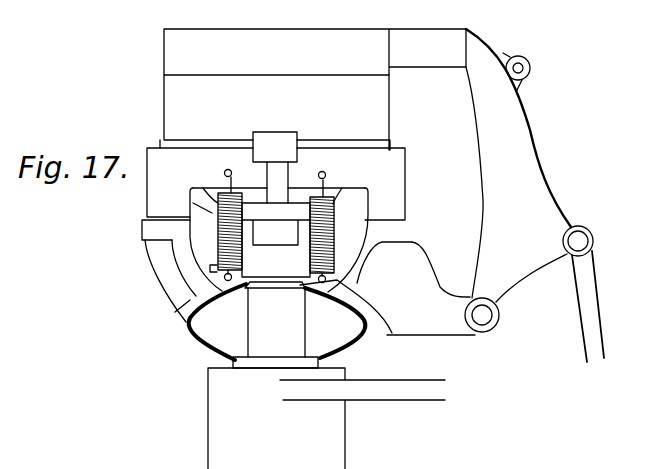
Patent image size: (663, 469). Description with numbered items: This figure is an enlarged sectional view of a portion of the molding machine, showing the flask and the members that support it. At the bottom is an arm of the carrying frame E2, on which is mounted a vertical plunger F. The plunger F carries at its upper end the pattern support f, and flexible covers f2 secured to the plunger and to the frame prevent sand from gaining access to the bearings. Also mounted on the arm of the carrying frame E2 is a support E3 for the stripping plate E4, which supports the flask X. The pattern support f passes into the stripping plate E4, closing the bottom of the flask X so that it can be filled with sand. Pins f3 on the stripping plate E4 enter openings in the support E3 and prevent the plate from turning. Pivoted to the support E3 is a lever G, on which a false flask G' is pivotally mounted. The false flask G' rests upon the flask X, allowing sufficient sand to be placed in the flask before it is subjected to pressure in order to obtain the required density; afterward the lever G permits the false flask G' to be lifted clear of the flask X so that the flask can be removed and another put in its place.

The false flask G' is at (315, 52).
The flask X is at (275, 112).
The stripping plate E4 is at (388, 183).
The pins f3 is at (275, 176).
The lever G is at (534, 195).
The support E3 is at (308, 261).
The pattern support f is at (213, 214).
The flexible covers f2 is at (277, 322).
The vertical plunger F is at (275, 285).
The carrying frame E2 is at (326, 418).